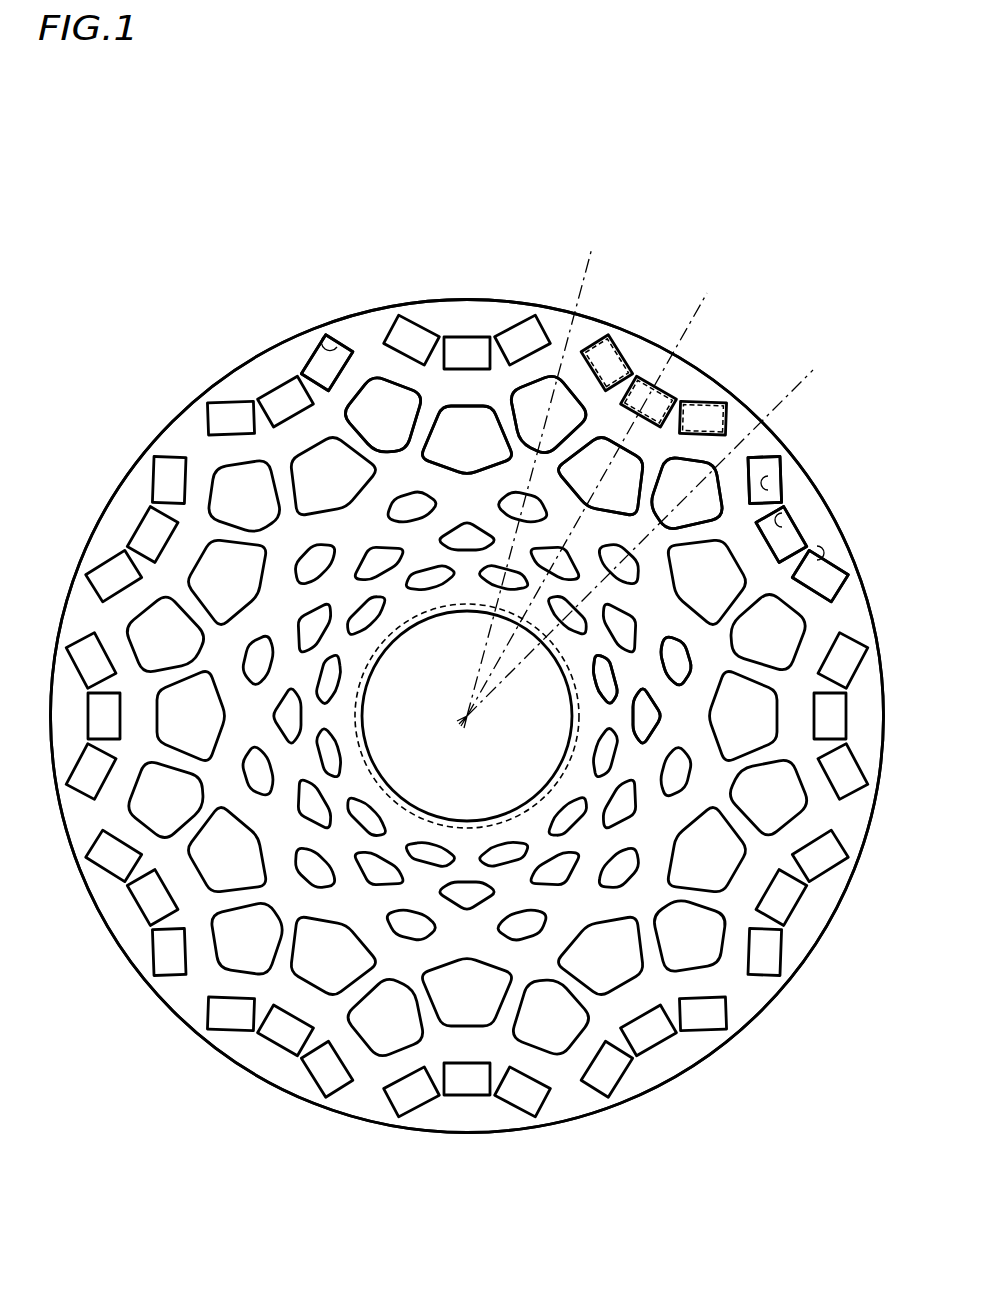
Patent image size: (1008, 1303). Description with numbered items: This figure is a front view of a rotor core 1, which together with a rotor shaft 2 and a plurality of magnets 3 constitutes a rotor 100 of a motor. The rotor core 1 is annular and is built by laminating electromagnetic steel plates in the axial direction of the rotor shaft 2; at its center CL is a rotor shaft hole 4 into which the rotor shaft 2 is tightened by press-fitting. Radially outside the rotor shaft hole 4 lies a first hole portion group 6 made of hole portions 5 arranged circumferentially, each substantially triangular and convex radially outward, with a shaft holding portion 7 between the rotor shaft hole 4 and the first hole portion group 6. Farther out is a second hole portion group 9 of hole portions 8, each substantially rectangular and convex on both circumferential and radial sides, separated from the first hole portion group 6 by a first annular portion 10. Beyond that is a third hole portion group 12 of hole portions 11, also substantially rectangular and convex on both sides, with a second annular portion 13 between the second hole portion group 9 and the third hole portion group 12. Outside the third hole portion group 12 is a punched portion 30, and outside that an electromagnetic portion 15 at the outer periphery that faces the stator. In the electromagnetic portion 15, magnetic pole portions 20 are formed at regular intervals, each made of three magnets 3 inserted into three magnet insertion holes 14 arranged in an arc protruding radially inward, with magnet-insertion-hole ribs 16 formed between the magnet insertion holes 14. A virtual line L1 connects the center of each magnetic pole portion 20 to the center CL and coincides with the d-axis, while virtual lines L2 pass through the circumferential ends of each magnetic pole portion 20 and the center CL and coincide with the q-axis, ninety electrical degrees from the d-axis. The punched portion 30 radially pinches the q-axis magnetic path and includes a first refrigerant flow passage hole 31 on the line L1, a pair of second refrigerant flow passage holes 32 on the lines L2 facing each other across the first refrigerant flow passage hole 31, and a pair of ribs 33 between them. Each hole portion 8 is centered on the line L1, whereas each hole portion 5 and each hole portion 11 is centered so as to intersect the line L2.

The rotor 100 is at (735, 197).
The rotor core 1 is at (173, 415).
The rotor shaft 2 is at (516, 818).
The magnet 3 is at (620, 347).
The rotor shaft hole 4 is at (385, 650).
The hole portion 5 is at (615, 673).
The first hole portion group 6 is at (348, 635).
The shaft holding portion 7 is at (363, 652).
The hole portion 8 is at (657, 722).
The second hole portion group 9 is at (298, 657).
The first annular portion 10 is at (395, 579).
The hole portion 11 is at (667, 632).
The third hole portion group 12 is at (337, 540).
The second annular portion 13 is at (308, 597).
The magnet insertion hole 14 is at (817, 553).
The electromagnetic portion 15 is at (393, 467).
The magnet-insertion-hole rib 16 is at (755, 512).
The magnetic pole portion 20 is at (265, 360).
The punched portion 30 is at (373, 427).
The first refrigerant flow passage hole 31 is at (486, 415).
The second refrigerant flow passage hole 32 is at (562, 392).
The rib 33 is at (422, 437).
The virtual line L1 is at (599, 486).
The virtual line L2 is at (653, 463).
The center CL is at (473, 735).